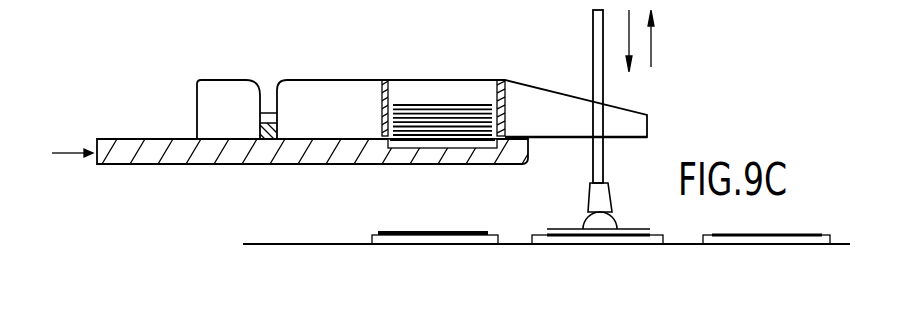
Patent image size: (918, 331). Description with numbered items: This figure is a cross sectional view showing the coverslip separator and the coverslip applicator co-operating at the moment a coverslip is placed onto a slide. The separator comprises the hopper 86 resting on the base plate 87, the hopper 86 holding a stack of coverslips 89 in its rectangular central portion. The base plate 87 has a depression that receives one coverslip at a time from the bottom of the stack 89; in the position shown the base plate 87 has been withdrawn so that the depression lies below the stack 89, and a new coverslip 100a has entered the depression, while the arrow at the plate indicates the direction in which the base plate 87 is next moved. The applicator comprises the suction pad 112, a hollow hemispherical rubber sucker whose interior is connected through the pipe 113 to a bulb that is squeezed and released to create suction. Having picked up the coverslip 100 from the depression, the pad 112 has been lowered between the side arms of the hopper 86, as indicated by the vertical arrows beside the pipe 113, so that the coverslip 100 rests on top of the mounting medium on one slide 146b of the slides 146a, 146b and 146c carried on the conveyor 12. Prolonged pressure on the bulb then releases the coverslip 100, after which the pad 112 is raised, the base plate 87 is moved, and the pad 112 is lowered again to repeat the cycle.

The conveyor 12 is at (314, 251).
The hopper 86 is at (236, 88).
The base plate 87 is at (175, 152).
The stack of coverslips 89 is at (443, 105).
The coverslip 100 is at (560, 240).
The new coverslip 100a is at (425, 149).
The suction pad 112 is at (613, 220).
The pipe 113 is at (604, 165).
The slide 146a is at (465, 245).
The slide 146b is at (640, 245).
The slide 146c is at (768, 245).